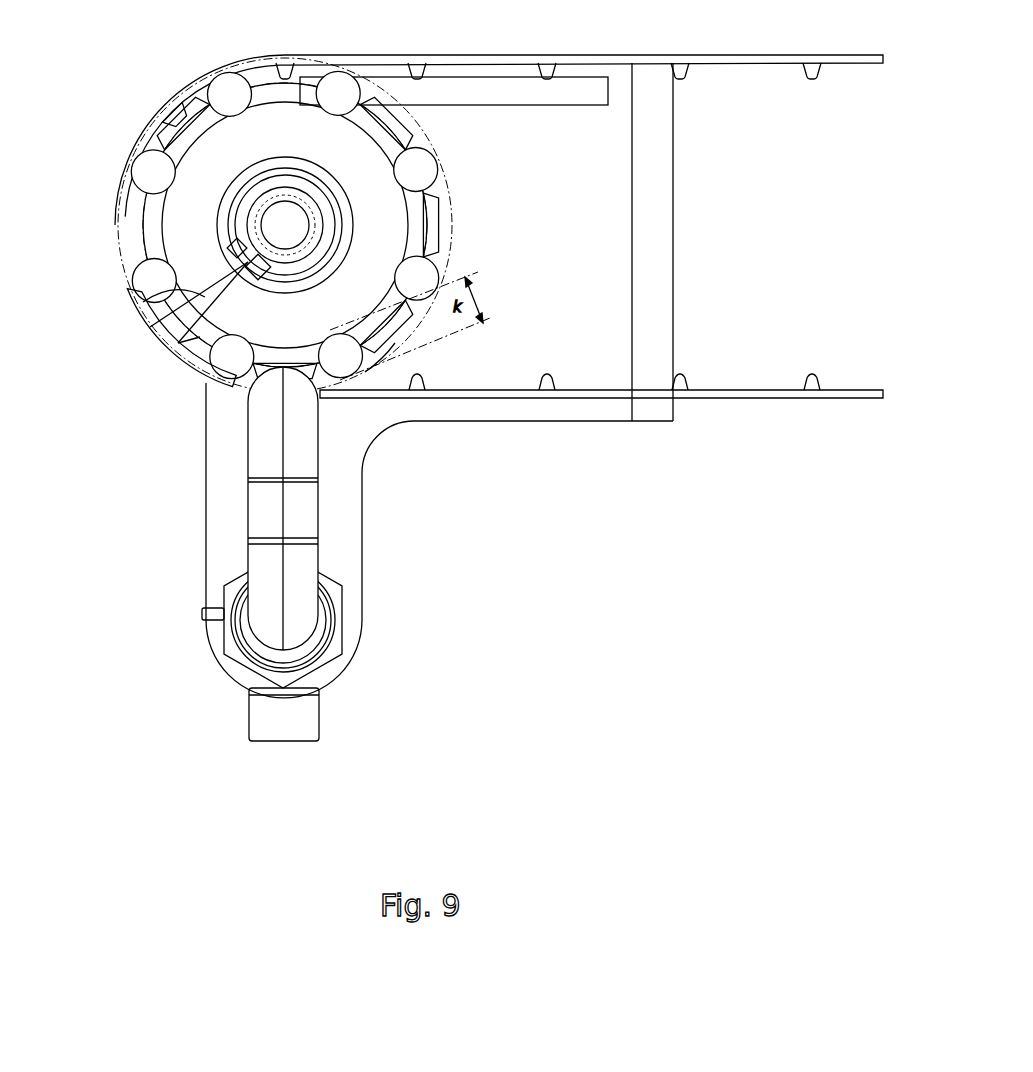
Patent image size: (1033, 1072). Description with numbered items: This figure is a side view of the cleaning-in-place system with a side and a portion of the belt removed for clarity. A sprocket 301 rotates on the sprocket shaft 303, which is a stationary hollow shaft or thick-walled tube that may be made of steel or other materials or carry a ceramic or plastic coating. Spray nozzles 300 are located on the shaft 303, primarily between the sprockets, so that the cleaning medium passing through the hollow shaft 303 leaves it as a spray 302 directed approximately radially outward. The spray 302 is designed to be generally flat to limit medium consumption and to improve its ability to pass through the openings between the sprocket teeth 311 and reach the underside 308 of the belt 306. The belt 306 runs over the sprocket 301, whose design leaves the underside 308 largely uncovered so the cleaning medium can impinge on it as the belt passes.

The spray nozzle 300 is at (243, 263).
The sprocket 301 is at (400, 228).
The spray 302 is at (248, 262).
The sprocket shaft 303 is at (272, 200).
The belt 306 is at (713, 396).
The underside of the belt 308 is at (607, 380).
The sprocket tooth 311 is at (366, 368).